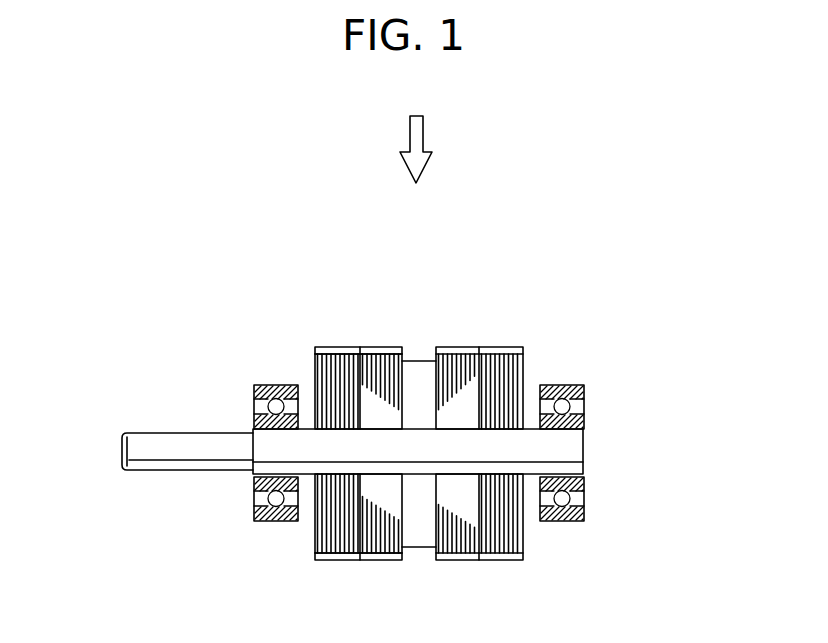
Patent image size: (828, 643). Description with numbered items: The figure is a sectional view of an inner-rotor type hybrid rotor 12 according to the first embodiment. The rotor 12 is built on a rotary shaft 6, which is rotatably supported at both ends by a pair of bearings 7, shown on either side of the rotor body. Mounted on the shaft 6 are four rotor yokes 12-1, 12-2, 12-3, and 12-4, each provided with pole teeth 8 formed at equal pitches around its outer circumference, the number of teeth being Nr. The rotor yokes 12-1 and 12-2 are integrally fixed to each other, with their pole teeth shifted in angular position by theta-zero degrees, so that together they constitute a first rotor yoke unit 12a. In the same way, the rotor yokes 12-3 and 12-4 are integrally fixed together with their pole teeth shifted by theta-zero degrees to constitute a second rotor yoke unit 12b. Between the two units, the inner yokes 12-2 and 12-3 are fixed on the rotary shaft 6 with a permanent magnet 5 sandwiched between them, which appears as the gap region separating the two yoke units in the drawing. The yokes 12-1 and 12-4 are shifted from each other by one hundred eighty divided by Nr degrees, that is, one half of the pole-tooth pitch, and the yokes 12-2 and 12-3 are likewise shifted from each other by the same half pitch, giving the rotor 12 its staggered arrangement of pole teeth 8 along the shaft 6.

The permanent magnet 5 is at (416, 548).
The rotary shaft 6 is at (122, 450).
The bearing 7 is at (254, 400).
The pole teeth 8 is at (335, 561).
The rotor 12 is at (452, 425).
The first rotor yoke unit 12a is at (346, 390).
The second rotor yoke unit 12b is at (504, 391).
The rotor yoke 12-1 is at (327, 347).
The rotor yoke 12-2 is at (382, 347).
The rotor yoke 12-3 is at (457, 347).
The rotor yoke 12-4 is at (510, 347).